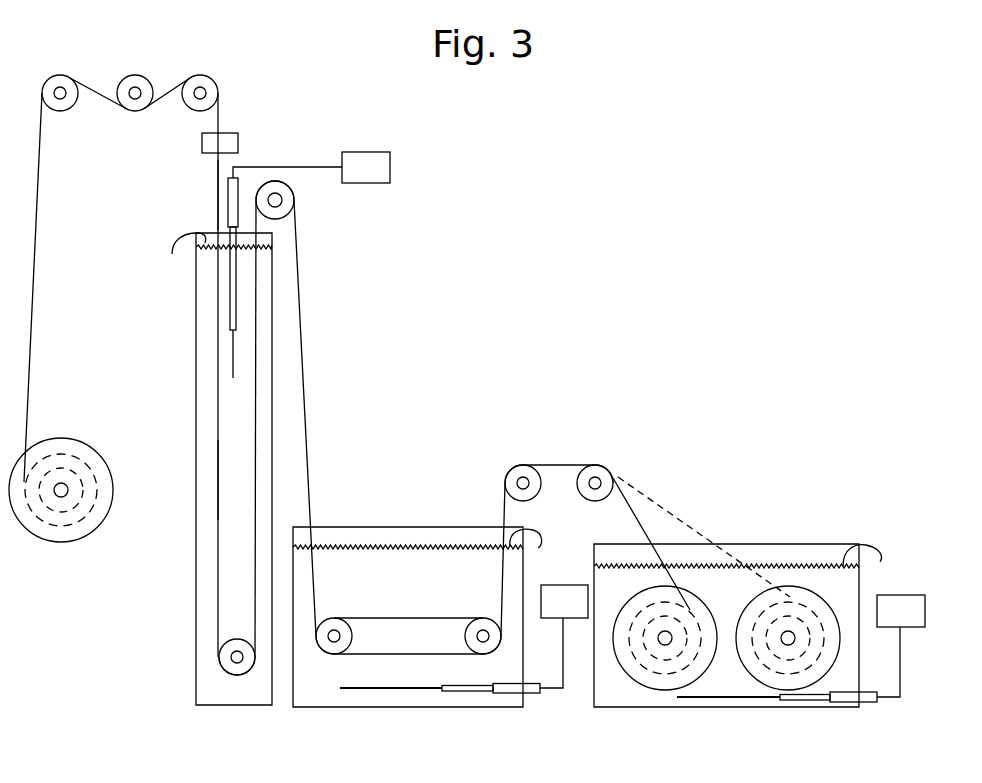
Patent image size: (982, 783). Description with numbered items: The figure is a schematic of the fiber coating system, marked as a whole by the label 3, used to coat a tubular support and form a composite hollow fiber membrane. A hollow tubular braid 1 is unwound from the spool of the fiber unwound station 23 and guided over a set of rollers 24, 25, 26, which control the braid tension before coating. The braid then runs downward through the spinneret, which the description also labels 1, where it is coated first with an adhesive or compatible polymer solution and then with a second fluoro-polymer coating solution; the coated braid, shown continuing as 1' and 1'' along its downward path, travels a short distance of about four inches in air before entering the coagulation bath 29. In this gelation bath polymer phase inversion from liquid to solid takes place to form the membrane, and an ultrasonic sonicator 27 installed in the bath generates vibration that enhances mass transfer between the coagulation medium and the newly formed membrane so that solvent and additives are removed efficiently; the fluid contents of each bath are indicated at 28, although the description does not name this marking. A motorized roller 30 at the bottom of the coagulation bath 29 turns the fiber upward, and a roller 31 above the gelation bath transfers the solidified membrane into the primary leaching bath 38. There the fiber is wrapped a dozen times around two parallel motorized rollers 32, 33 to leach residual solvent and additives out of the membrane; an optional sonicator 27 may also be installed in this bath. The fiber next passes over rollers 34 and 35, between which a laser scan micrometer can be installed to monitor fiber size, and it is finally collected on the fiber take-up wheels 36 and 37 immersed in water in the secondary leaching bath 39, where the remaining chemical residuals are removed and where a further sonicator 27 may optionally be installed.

The tubular support 1 is at (407, 376).
The wire segment after first treatment 1' is at (207, 195).
The wire segment in tank 1'' is at (231, 480).
The wire treatment apparatus 3 is at (552, 315).
The fiber unwound station 23 is at (61, 511).
The roller 24 is at (60, 79).
The roller 25 is at (135, 113).
The roller 26 is at (200, 79).
The ultrasonic sonicator 27 is at (574, 427).
The liquid level 28 is at (523, 408).
The coagulation bath 29 is at (211, 469).
The motorized roller 30 is at (237, 671).
The roller 31 is at (295, 201).
The motorized roller 32 is at (334, 621).
The motorized roller 33 is at (483, 621).
The roller 34 is at (523, 467).
The roller 35 is at (595, 467).
The fiber take-up wheel 36 is at (665, 638).
The fiber take-up wheel 37 is at (788, 638).
The primary leaching bath 38 is at (408, 617).
The secondary leaching bath 39 is at (726, 625).